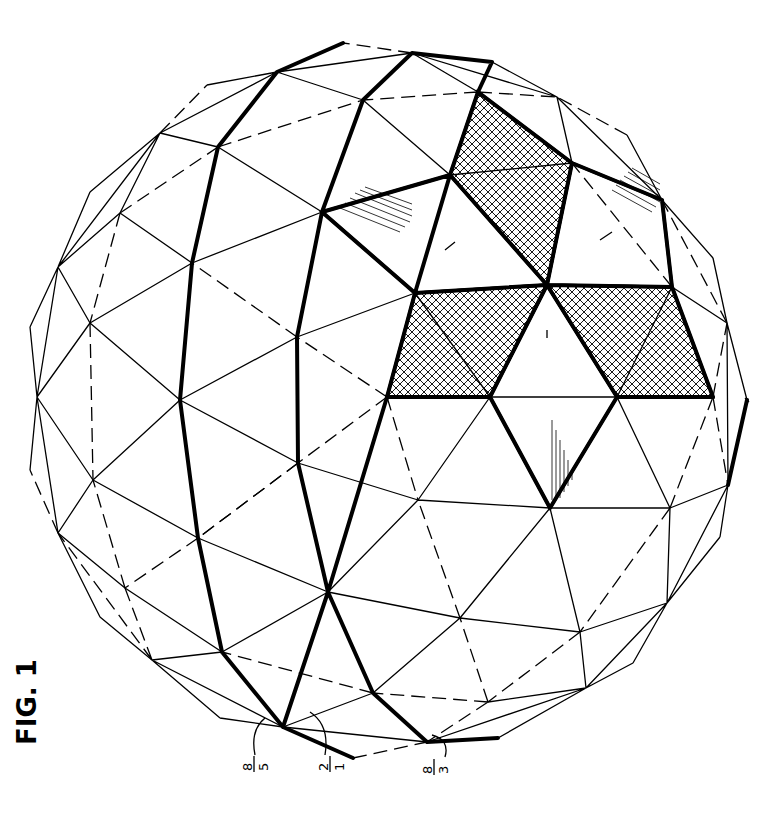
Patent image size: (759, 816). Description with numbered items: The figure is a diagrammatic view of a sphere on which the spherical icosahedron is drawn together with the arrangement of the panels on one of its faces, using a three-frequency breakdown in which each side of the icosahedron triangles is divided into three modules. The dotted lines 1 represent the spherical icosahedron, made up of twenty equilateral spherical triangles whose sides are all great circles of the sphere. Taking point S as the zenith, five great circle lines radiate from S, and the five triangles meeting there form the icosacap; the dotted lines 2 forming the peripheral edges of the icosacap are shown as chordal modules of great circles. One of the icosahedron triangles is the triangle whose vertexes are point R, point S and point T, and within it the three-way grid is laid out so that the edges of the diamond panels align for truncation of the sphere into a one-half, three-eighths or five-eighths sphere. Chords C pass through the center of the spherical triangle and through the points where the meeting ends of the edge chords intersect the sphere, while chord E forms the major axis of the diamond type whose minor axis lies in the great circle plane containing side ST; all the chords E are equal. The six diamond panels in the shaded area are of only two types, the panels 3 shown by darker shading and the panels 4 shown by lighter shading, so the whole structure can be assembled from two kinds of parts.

The dotted lines 1 is at (266, 485).
The dotted lines forming the peripheral edges of the icosacap 2 is at (92, 432).
The diamond panel 3 is at (527, 153).
The diamond panel 4 is at (577, 208).
The point R is at (478, 92).
The point S is at (395, 412).
The chords C is at (547, 440).
The point T is at (752, 428).
The chord E is at (444, 248).